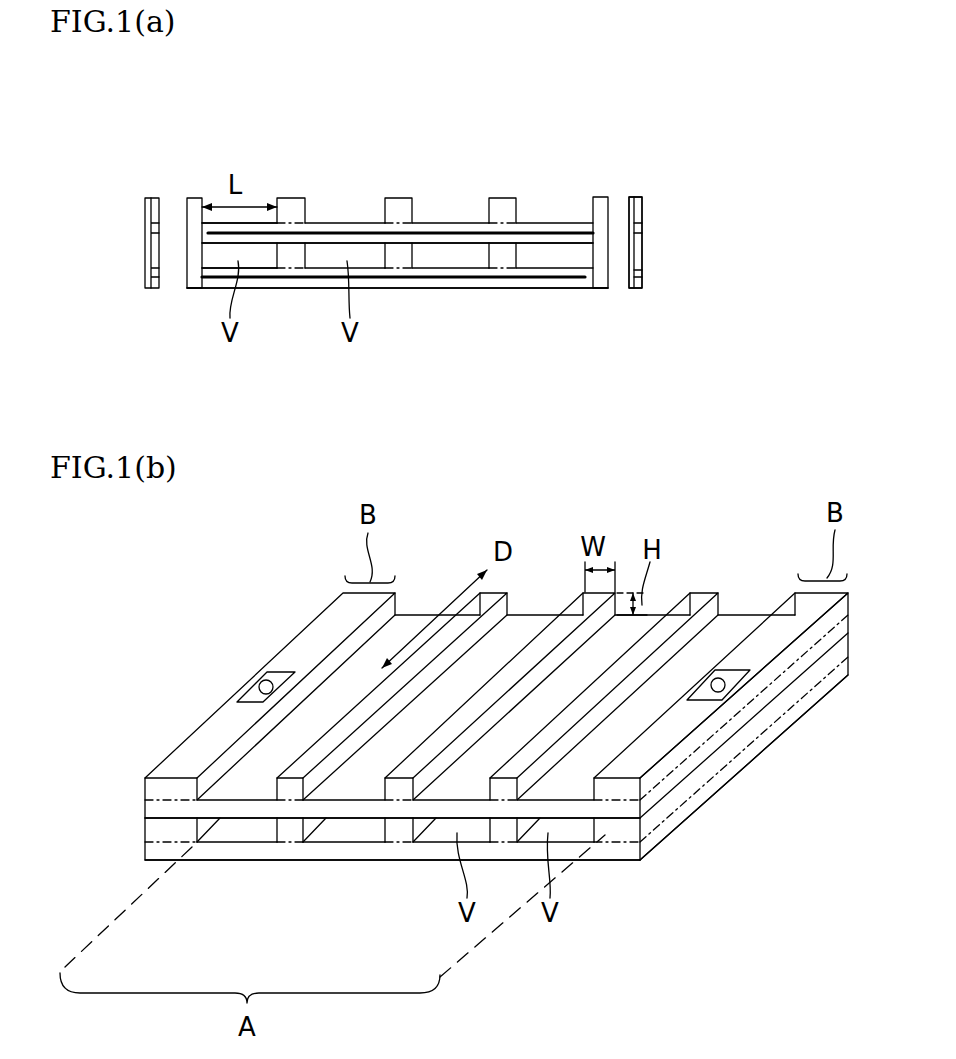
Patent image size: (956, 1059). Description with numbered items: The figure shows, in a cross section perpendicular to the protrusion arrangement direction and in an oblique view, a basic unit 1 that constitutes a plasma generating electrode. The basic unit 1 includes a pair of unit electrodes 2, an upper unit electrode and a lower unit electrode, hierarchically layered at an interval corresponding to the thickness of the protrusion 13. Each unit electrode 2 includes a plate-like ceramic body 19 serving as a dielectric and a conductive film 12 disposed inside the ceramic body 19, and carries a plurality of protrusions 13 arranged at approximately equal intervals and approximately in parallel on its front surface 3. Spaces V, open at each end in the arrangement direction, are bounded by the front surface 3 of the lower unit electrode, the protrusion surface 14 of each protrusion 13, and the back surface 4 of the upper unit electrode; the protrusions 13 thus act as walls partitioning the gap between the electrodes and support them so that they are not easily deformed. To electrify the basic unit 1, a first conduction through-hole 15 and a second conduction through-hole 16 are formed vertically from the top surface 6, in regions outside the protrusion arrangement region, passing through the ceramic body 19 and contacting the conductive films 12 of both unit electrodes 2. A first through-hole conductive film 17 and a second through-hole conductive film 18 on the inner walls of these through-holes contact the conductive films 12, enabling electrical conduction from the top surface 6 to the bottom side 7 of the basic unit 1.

In FIG. 1A, the basic unit 1 is at (674, 177).
In FIG. 1B, the basic unit 1 is at (698, 543).
In FIG. 1A, the unit electrodes 2 is at (140, 245).
In FIG. 1B, the unit electrodes 2 is at (140, 799).
In FIG. 1A, the front surface 3 is at (540, 222).
In FIG. 1B, the front surface 3 is at (412, 625).
In FIG. 1A, the back surface 4 is at (457, 244).
In FIG. 1B, the back surface 4 is at (243, 818).
In FIG. 1A, the top surface 6 is at (641, 194).
In FIG. 1B, the top surface 6 is at (778, 611).
In FIG. 1A, the bottom side 7 is at (593, 299).
In FIG. 1B, the bottom side 7 is at (612, 864).
In FIG. 1A, the conductive film 12 is at (342, 227).
In FIG. 1A, the protrusion 13 is at (290, 197).
In FIG. 1B, the protrusion 13 is at (510, 597).
In FIG. 1A, the protrusion surface 14 is at (413, 253).
In FIG. 1A, the first conduction through-hole 15 is at (614, 208).
In FIG. 1B, the first conduction through-hole 15 is at (727, 690).
In FIG. 1A, the second conduction through-hole 16 is at (173, 213).
In FIG. 1B, the second conduction through-hole 16 is at (248, 685).
In FIG. 1A, the first through-hole conductive film 17 is at (608, 253).
In FIG. 1A, the second through-hole conductive film 18 is at (162, 253).
In FIG. 1A, the plate-like ceramic body 19 is at (642, 232).
In FIG. 1B, the plate-like ceramic body 19 is at (652, 853).